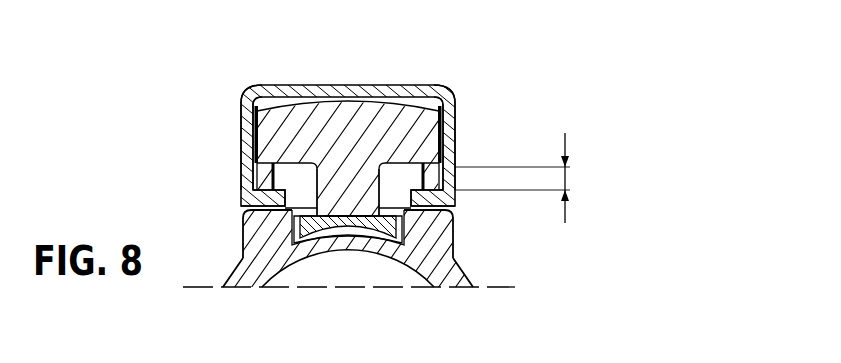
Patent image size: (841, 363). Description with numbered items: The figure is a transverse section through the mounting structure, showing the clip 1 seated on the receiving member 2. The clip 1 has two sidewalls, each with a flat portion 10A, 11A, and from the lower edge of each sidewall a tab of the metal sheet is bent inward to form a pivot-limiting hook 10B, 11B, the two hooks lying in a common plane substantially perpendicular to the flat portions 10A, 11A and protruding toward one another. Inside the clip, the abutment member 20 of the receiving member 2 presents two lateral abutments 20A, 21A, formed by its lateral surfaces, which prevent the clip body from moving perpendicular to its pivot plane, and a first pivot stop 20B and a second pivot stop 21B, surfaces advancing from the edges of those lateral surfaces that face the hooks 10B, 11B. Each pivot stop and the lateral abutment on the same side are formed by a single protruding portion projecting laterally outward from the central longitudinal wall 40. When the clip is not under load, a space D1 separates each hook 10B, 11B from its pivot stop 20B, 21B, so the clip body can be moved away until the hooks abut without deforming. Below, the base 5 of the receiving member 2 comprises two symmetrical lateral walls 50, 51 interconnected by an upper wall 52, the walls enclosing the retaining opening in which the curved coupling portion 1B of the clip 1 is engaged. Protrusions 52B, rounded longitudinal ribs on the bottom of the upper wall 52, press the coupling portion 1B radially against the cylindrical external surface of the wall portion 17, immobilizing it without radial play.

The clip 1 is at (230, 87).
The flat portion of sidewall 10A is at (251, 116).
The pivot-limiting hook 10B is at (252, 194).
The flat portion of sidewall 11A is at (447, 110).
The pivot-limiting hook 11B is at (448, 194).
The abutment member 20 is at (304, 110).
The lateral abutment 20A is at (256, 140).
The first pivot stop 20B is at (268, 172).
The lateral abutment 21A is at (442, 133).
The second pivot stop 21B is at (442, 164).
The central longitudinal wall 40 is at (349, 162).
The upper wall 52 is at (395, 205).
The lateral wall 50 is at (298, 226).
The protrusions 52B is at (310, 220).
The coupling portion 1B is at (343, 228).
The wall portion 17 is at (374, 245).
The lateral wall 51 is at (420, 245).
The base 5 is at (232, 230).
The receiving member 2 is at (473, 249).
The space D1 is at (528, 178).